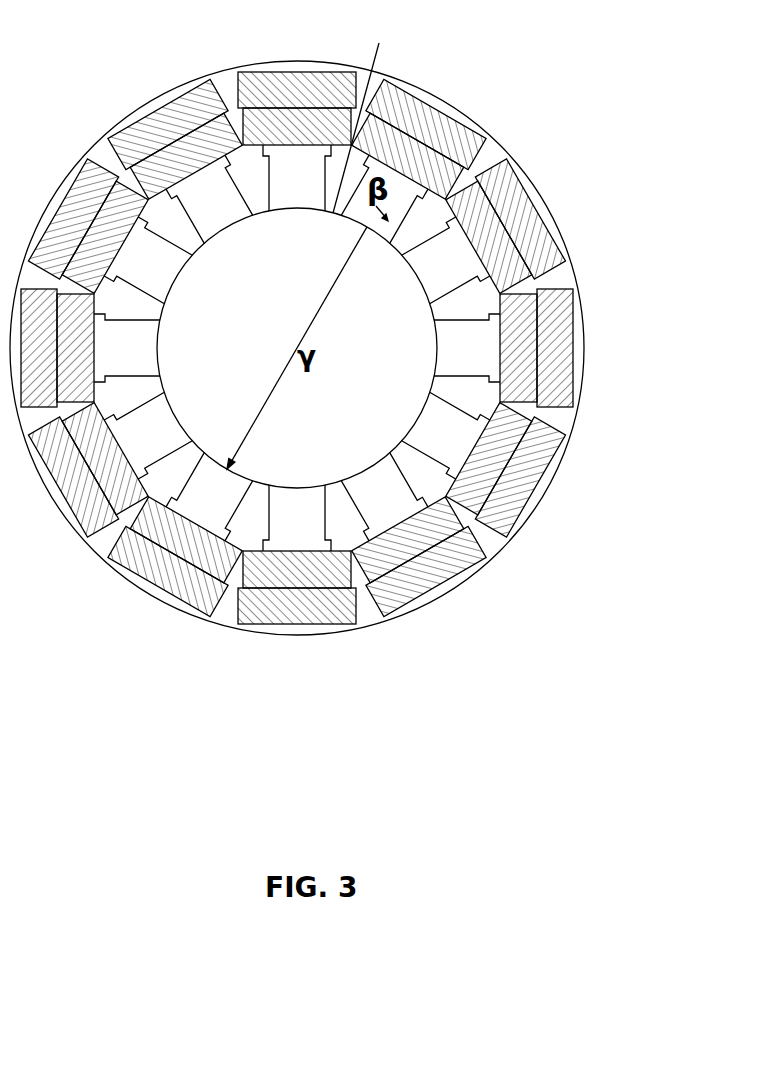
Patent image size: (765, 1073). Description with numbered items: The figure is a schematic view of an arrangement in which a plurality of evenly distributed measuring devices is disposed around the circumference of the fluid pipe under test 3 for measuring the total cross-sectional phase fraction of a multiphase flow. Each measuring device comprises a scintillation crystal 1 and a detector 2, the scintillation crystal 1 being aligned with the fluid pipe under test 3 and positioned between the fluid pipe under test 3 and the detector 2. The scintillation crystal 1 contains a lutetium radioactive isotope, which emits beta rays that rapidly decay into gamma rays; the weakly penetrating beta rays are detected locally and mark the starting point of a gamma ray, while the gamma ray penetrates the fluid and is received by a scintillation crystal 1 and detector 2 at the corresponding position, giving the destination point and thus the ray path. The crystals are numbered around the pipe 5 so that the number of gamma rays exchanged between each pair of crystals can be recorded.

The scintillation crystal 1 is at (435, 262).
The detector 2 is at (510, 232).
The fluid pipe under test 3 is at (463, 118).
The pipe 5 is at (420, 43).